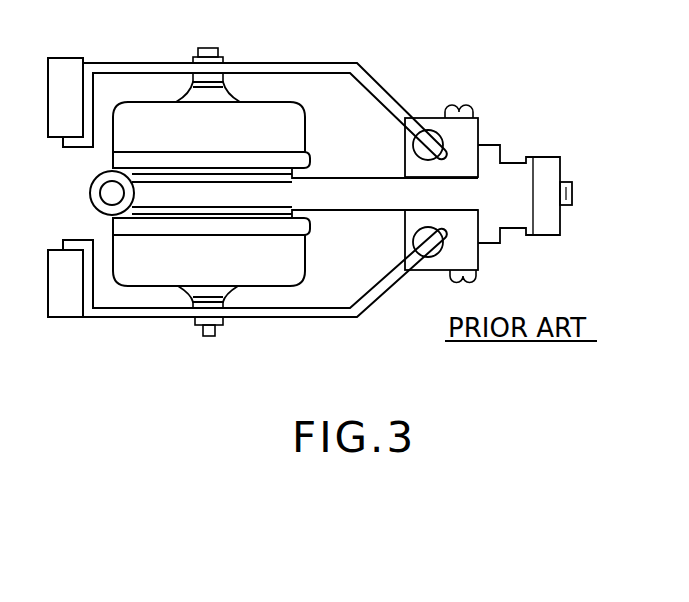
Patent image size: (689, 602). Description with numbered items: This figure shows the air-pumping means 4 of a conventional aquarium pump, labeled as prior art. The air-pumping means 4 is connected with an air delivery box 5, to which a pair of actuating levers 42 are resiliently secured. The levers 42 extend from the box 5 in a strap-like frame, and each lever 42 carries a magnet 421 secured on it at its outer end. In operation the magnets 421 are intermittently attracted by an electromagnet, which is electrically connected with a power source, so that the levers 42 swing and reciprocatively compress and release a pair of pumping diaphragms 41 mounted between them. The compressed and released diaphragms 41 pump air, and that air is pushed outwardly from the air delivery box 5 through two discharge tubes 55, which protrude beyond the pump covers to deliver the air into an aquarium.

The air-pumping means 4 is at (158, 291).
The pumping diaphragm 41 is at (266, 262).
The actuating lever 42 is at (340, 318).
The magnet 421 is at (62, 320).
The air delivery box 5 is at (502, 152).
The discharge tube 55 is at (572, 183).